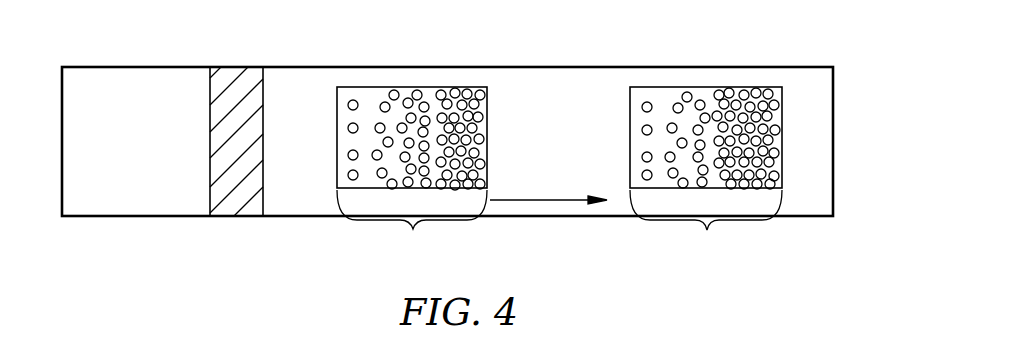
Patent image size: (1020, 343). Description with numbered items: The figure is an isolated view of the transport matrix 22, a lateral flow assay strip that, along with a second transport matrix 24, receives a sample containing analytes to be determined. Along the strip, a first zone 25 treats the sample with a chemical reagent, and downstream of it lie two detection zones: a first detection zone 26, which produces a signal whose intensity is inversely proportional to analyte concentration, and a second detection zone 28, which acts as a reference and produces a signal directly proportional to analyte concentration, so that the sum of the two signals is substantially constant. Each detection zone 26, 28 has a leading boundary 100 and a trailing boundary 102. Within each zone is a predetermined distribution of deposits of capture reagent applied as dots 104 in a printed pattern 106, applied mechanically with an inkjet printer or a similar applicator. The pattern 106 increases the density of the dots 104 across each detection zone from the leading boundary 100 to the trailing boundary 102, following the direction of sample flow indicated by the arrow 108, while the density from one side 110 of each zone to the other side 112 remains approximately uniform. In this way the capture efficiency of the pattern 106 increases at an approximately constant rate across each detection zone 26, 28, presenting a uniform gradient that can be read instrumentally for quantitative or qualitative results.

The transport matrix 22 is at (139, 198).
The second transport matrix 24 is at (818, 97).
The first zone 25 is at (230, 75).
The first detection zone 26 is at (405, 92).
The second detection zone 28 is at (662, 95).
The leading boundary 100 is at (337, 110).
The trailing boundary 102 is at (487, 120).
The dots 104 is at (347, 172).
The pattern 106 is at (559, 226).
The arrow 108 is at (560, 200).
The one side 110 is at (362, 85).
The other side 112 is at (363, 188).